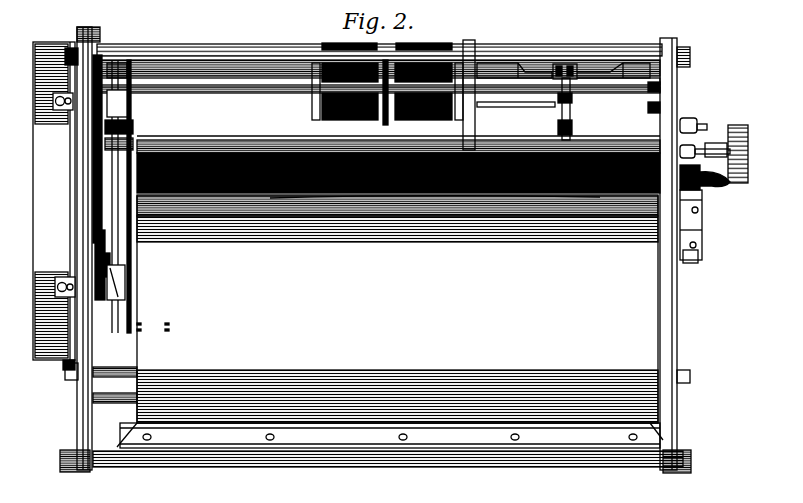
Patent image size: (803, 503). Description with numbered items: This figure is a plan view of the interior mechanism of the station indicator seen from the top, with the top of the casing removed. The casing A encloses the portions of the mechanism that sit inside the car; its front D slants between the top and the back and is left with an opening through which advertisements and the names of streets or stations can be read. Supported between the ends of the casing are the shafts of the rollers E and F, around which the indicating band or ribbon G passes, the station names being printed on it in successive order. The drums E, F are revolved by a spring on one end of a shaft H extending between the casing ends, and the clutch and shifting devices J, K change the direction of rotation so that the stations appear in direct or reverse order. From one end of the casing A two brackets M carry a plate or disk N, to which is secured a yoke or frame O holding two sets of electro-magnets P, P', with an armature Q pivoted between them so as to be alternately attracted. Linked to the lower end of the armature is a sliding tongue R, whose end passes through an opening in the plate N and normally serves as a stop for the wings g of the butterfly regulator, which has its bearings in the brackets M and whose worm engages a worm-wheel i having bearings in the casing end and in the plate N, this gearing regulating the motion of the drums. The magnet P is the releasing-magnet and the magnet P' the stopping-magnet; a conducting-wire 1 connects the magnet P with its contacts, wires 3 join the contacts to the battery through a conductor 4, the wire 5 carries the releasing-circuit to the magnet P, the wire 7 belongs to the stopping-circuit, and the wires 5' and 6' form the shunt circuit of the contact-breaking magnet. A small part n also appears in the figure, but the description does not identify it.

The casing A is at (97, 32).
The roller F is at (137, 110).
The roller E is at (135, 265).
The indicating band or ribbon G is at (397, 318).
The front D is at (390, 435).
The stopping-magnet P' is at (351, 95).
The releasing-magnet P is at (423, 89).
The armature Q is at (384, 98).
The conducting-wires 3 is at (423, 123).
The conducting-wire 5' is at (304, 33).
The conducting-wire 6' is at (227, 81).
The conducting-wire 7 is at (320, 115).
The conducting-wire 5 is at (496, 105).
The wings g is at (563, 71).
The screw n is at (572, 98).
The worm-wheel i is at (572, 120).
The yoke or frame O is at (472, 68).
The sliding tongue R is at (495, 62).
The brackets M is at (533, 45).
The plate or disk N is at (487, 120).
The shaft H is at (488, 150).
The conductor 4 is at (731, 125).
The conducting-wire 1 is at (478, 197).
The clutch and shifting device K is at (705, 212).
The clutch and shifting device J is at (688, 263).